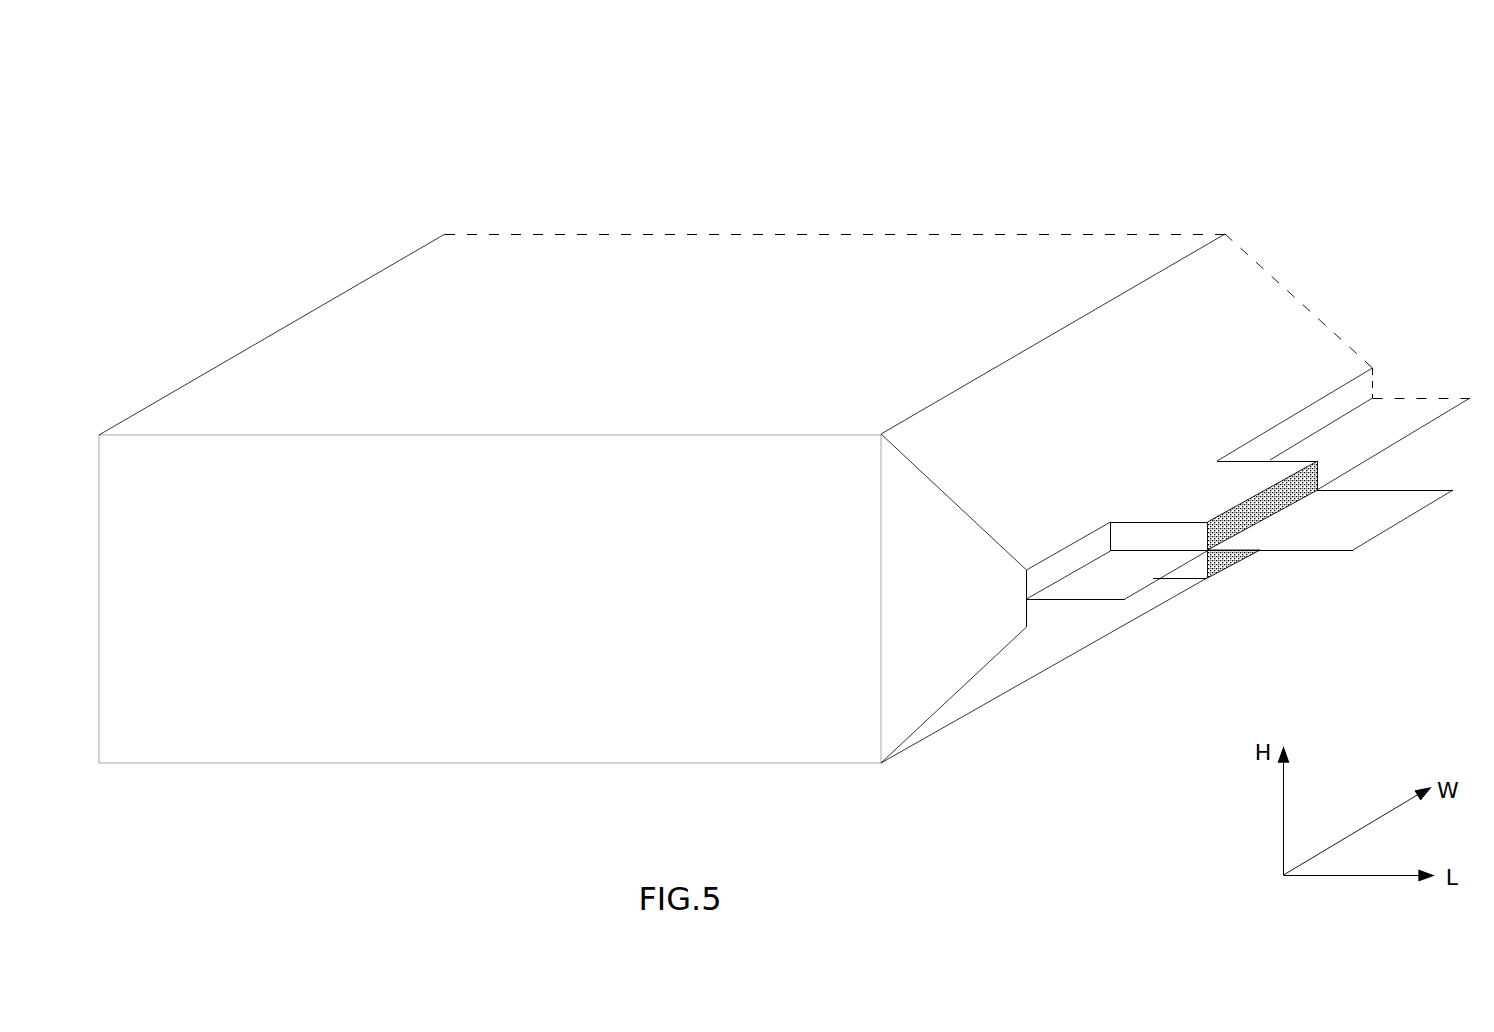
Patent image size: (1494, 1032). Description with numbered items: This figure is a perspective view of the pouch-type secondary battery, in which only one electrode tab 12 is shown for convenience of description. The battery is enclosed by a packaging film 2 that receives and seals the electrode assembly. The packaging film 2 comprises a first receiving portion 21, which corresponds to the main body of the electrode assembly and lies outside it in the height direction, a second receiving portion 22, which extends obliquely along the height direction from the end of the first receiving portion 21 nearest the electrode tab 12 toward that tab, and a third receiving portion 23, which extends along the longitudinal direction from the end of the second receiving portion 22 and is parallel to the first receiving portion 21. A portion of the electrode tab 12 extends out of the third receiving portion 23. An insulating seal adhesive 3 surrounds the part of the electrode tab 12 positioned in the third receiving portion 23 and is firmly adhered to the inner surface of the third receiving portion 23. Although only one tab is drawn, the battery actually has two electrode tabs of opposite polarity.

The packaging film 2 is at (784, 264).
The first receiving portion 21 is at (1064, 263).
The second receiving portion 22 is at (1242, 320).
The third receiving portion 23 is at (1260, 468).
The insulating seal adhesive 3 is at (1302, 518).
The electrode tab 12 is at (1342, 507).